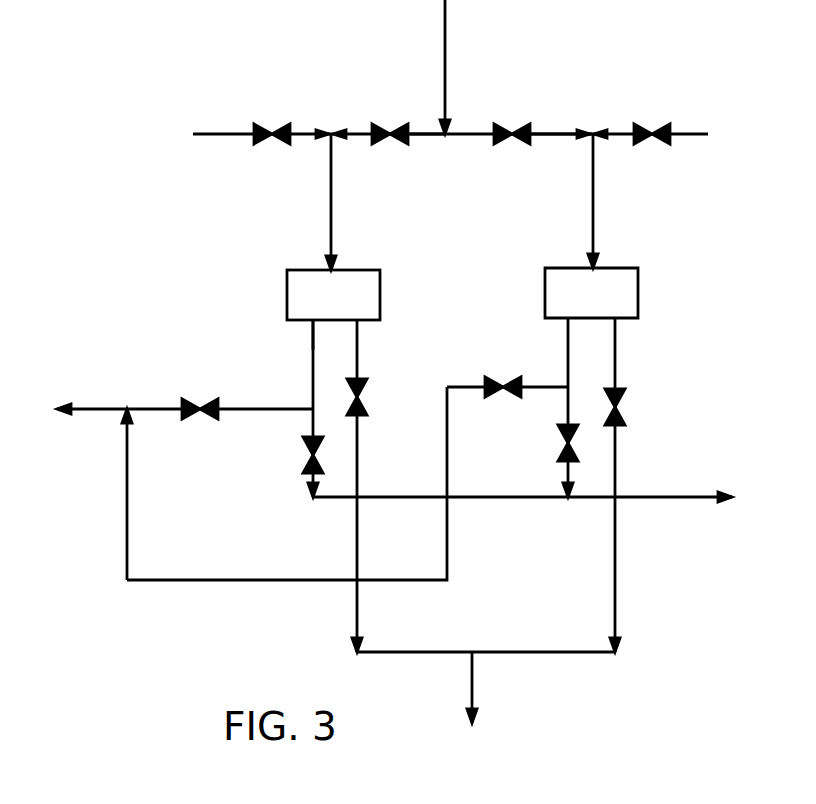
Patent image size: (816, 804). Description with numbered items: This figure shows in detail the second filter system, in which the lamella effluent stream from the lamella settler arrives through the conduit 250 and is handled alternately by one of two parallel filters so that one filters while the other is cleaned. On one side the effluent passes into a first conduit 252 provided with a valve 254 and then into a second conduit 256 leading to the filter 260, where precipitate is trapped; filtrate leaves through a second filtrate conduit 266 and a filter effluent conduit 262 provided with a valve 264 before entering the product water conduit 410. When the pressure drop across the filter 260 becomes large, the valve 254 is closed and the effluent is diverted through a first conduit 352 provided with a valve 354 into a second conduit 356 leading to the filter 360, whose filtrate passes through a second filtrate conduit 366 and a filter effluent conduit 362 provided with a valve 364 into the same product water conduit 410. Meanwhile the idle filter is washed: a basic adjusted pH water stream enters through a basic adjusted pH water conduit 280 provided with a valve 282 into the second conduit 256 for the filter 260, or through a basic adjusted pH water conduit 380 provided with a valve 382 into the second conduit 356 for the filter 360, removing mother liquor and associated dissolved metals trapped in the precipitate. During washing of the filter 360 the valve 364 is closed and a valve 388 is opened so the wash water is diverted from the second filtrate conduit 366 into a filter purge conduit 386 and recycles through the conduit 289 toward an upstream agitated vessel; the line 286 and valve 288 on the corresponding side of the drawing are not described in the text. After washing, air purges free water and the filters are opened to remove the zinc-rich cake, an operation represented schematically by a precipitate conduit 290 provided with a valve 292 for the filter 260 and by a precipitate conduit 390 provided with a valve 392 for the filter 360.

The conduit 250 is at (446, 30).
The first conduit 252 is at (416, 136).
The valve 254 is at (393, 126).
The second conduit 256 is at (331, 196).
The filter 260 is at (305, 286).
The filter effluent conduit 262 is at (303, 438).
The valve 264 is at (305, 463).
The second filtrate conduit 266 is at (313, 348).
The basic adjusted pH water conduit 280 is at (211, 133).
The valve 282 is at (265, 124).
The side draw line 286 is at (233, 412).
The valve 288 is at (212, 378).
The conduit 289 is at (92, 412).
The precipitate conduit 290 is at (370, 440).
The valve 292 is at (362, 398).
The first conduit 352 is at (574, 146).
The valve 354 is at (512, 124).
The second conduit 356 is at (597, 190).
The filter 360 is at (620, 300).
The filter effluent conduit 362 is at (561, 430).
The valve 364 is at (560, 455).
The second filtrate conduit 366 is at (568, 334).
The basic adjusted pH water conduit 380 is at (698, 138).
The valve 382 is at (648, 124).
The filter purge conduit 386 is at (462, 541).
The valve 388 is at (508, 385).
The precipitate conduit 390 is at (625, 452).
The valve 392 is at (622, 411).
The product water conduit 410 is at (628, 500).